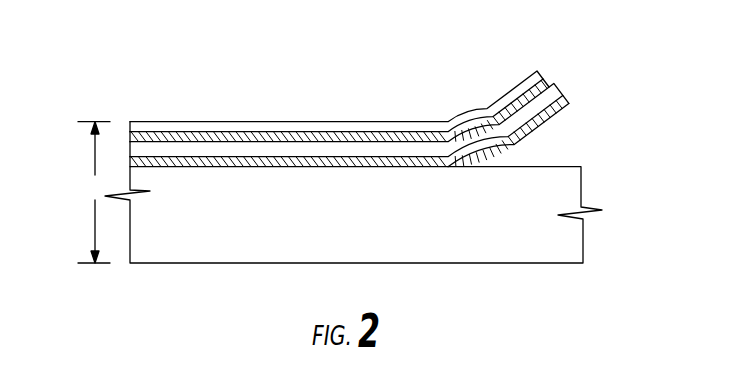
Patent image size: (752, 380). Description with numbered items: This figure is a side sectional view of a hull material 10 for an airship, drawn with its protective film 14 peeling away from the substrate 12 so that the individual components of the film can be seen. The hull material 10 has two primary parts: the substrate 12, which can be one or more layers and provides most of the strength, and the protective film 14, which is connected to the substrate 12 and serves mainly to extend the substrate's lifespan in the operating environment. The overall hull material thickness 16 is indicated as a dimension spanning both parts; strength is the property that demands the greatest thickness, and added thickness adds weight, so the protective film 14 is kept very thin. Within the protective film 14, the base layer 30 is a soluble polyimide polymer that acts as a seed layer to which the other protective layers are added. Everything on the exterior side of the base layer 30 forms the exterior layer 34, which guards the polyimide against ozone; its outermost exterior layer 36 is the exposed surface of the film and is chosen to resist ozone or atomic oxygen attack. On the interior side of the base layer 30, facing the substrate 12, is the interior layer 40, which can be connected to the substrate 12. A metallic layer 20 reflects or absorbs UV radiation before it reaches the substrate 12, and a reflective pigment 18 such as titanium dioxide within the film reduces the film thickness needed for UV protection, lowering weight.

The hull material 10 is at (78, 122).
The substrate 12 is at (367, 238).
The protective film 14 is at (394, 88).
The hull material thickness 16 is at (94, 192).
The reflective pigment 18 is at (467, 132).
The metallic layer 20 is at (372, 130).
The base layer 30 is at (547, 106).
The exterior layer 34 is at (367, 89).
The outermost exterior layer 36 is at (413, 127).
The interior layer 40 is at (533, 141).